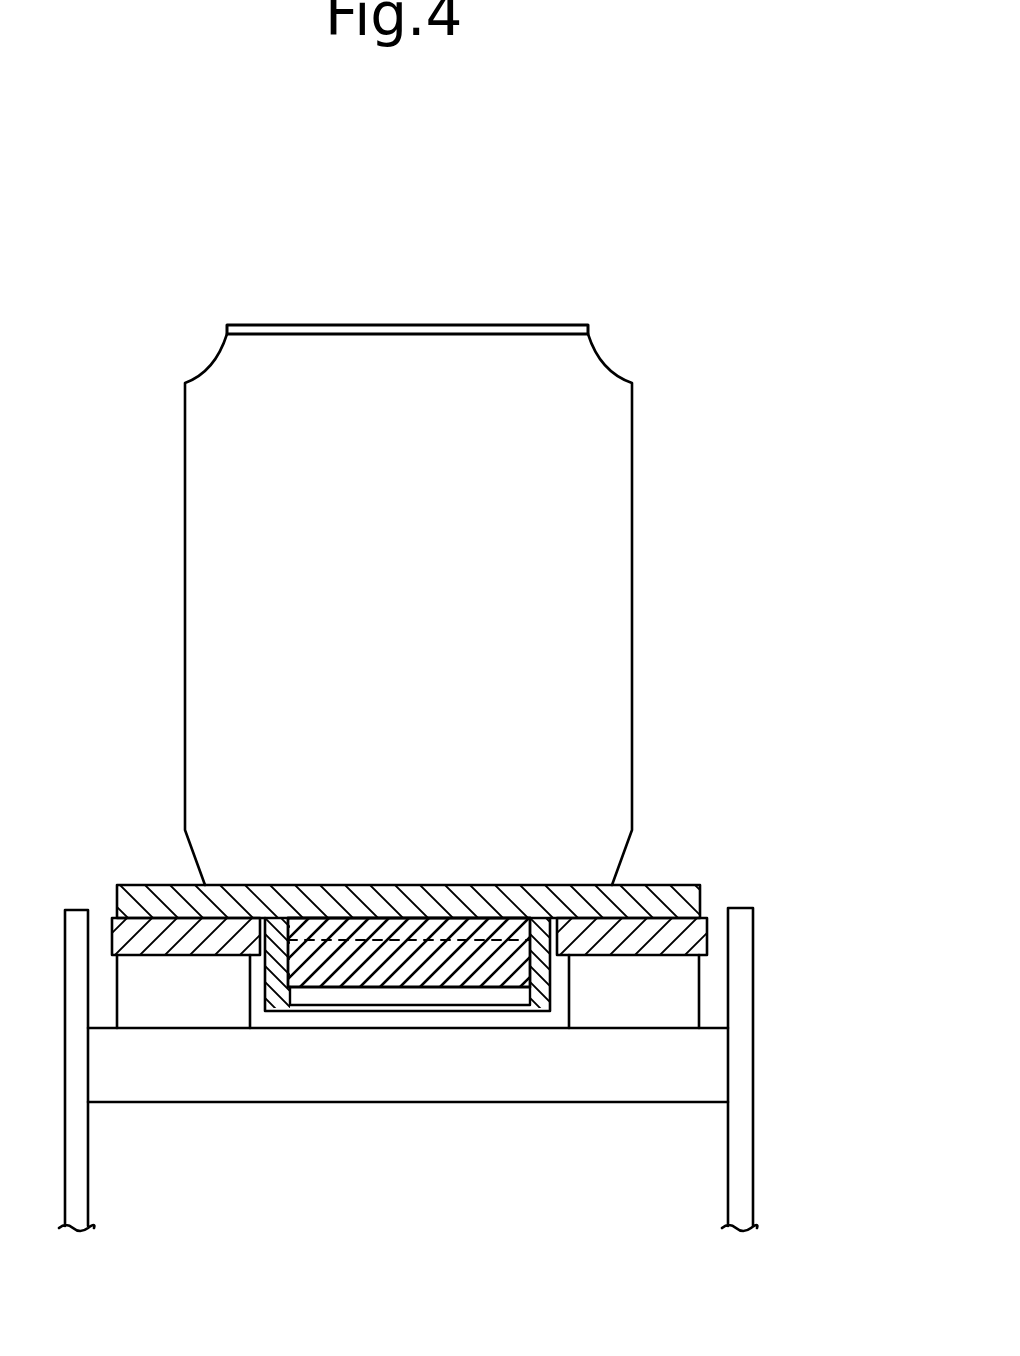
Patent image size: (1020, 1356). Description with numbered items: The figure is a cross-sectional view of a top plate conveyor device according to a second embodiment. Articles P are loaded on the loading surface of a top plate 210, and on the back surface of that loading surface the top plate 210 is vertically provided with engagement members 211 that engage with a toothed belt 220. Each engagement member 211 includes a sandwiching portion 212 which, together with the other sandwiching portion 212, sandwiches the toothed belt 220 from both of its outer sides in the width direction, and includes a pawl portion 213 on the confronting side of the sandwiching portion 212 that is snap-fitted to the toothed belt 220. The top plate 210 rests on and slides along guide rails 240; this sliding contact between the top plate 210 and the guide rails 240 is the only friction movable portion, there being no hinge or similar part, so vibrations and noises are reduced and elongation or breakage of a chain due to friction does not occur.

The articles P is at (615, 518).
The top plate 210 is at (658, 898).
The guide rails 240 is at (692, 940).
The toothed belt 220 is at (442, 988).
The engagement member 211 is at (361, 1100).
The sandwiching portion 212 is at (273, 953).
The pawl portion 213 is at (305, 991).